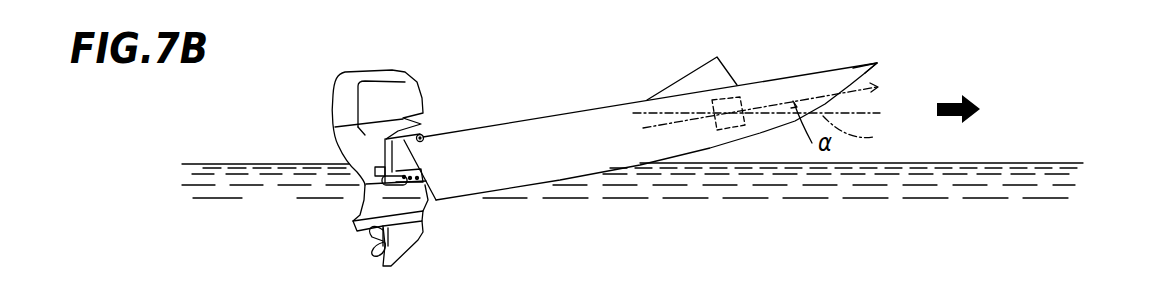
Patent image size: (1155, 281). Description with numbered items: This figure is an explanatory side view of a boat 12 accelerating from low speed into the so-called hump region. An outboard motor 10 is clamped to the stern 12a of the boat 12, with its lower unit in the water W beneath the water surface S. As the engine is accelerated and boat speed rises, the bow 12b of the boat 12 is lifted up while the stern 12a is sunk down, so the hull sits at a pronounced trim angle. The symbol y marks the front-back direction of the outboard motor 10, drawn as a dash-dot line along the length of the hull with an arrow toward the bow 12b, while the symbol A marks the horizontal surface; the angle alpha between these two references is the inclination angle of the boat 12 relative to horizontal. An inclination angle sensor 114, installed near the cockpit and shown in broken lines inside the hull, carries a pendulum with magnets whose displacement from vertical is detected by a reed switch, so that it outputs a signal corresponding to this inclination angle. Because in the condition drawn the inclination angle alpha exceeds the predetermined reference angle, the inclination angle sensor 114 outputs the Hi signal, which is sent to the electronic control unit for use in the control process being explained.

The outboard motor 10 is at (406, 62).
The boat 12 is at (667, 138).
The stern 12a is at (446, 196).
The bow 12b is at (853, 68).
The inclination angle sensor 114 is at (740, 90).
The water surface S is at (270, 163).
The seawater or freshwater W is at (279, 212).
The front-back direction of the outboard motor y is at (770, 104).
The horizontal surface A is at (873, 137).